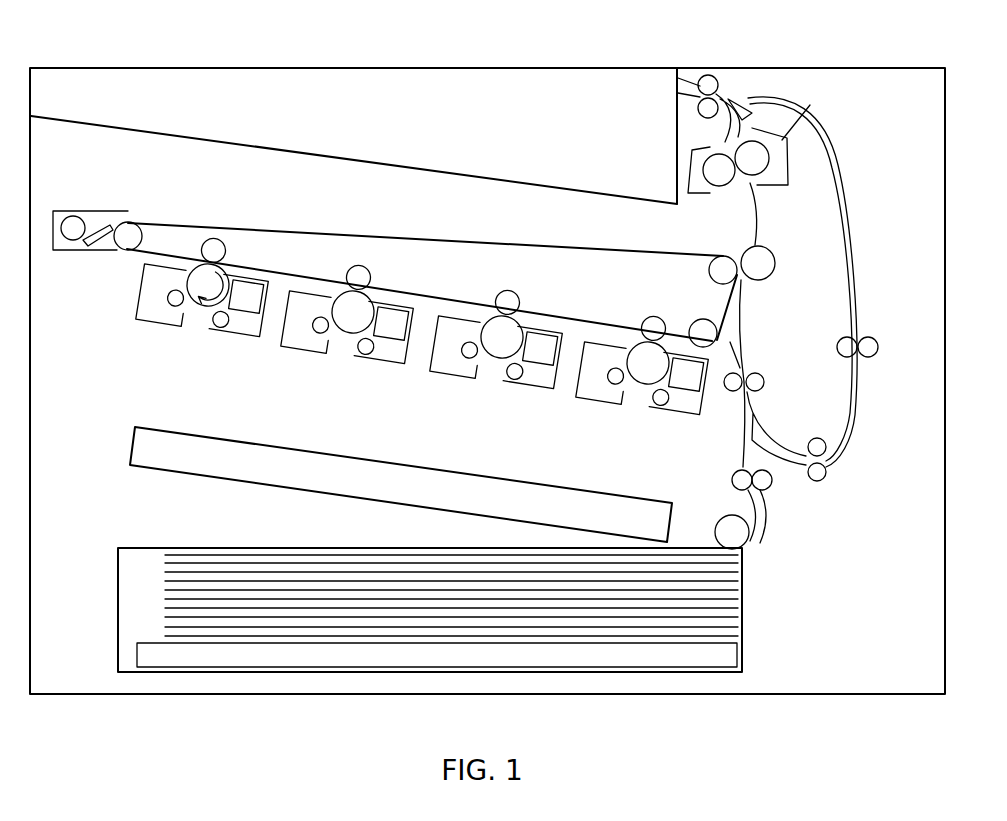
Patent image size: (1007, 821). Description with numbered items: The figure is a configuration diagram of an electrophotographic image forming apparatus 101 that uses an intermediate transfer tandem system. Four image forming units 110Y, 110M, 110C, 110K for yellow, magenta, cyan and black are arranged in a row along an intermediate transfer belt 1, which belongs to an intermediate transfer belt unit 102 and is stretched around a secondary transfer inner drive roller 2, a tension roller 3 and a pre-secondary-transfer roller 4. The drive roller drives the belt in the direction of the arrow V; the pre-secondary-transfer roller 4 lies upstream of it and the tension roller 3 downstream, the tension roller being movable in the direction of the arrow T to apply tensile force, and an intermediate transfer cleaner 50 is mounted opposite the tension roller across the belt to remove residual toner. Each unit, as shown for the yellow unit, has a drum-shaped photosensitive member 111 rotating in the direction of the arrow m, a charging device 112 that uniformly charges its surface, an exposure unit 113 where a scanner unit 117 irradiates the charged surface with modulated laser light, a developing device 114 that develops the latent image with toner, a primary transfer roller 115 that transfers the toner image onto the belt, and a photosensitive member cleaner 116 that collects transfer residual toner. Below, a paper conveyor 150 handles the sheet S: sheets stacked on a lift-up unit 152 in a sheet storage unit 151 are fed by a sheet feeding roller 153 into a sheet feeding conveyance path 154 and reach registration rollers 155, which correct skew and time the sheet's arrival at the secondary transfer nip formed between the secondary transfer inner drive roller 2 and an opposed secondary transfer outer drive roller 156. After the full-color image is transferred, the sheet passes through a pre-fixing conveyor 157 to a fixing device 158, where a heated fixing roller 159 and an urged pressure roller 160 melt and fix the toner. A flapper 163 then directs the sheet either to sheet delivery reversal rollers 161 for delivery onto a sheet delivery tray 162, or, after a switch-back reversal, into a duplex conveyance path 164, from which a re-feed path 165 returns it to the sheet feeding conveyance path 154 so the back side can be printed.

The intermediate transfer belt 1 is at (385, 242).
The secondary transfer inner drive roller 2 is at (717, 258).
The tension roller 3 is at (131, 228).
The pre-secondary-transfer roller 4 is at (698, 321).
The intermediate transfer cleaner 50 is at (100, 210).
The image forming apparatus 101 is at (172, 68).
The intermediate transfer belt unit 102 is at (314, 204).
The image forming unit 110Y is at (196, 295).
The image forming unit 110M is at (285, 368).
The image forming unit 110C is at (430, 388).
The image forming unit 110K is at (582, 412).
The photosensitive member 111 is at (200, 270).
The charging device 112 is at (232, 326).
The exposure unit 113 is at (210, 312).
The developing device 114 is at (165, 300).
The primary transfer roller 115 is at (222, 244).
The photosensitive member cleaner 116 is at (262, 290).
The scanner unit 117 is at (142, 448).
The paper conveyor 150 is at (809, 502).
The sheet storage unit 151 is at (130, 600).
The lift-up unit 152 is at (158, 662).
The sheet feeding roller 153 is at (747, 543).
The sheet feeding conveyance path 154 is at (742, 448).
The registration rollers 155 is at (765, 385).
The secondary transfer outer drive roller 156 is at (767, 280).
The pre-fixing conveyor 157 is at (743, 213).
The fixing device 158 is at (803, 110).
The fixing roller 159 is at (706, 156).
The pressure roller 160 is at (774, 173).
The sheet delivery reversal rollers 161 is at (713, 78).
The sheet delivery tray 162 is at (352, 160).
The flapper 163 is at (750, 97).
The duplex conveyance path 164 is at (870, 93).
The re-feed path 165 is at (770, 447).
The sheet S is at (727, 592).
The arrow m is at (228, 283).
The arrow V is at (530, 252).
The arrow T is at (548, 312).